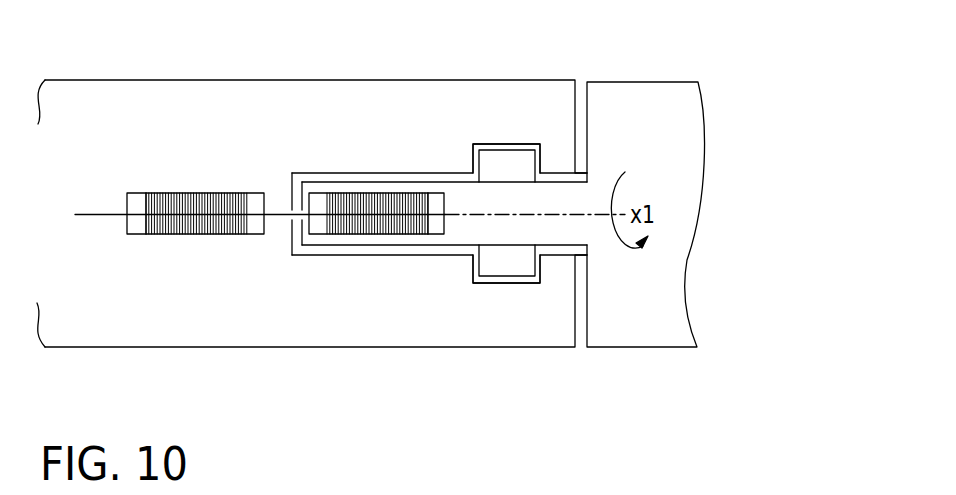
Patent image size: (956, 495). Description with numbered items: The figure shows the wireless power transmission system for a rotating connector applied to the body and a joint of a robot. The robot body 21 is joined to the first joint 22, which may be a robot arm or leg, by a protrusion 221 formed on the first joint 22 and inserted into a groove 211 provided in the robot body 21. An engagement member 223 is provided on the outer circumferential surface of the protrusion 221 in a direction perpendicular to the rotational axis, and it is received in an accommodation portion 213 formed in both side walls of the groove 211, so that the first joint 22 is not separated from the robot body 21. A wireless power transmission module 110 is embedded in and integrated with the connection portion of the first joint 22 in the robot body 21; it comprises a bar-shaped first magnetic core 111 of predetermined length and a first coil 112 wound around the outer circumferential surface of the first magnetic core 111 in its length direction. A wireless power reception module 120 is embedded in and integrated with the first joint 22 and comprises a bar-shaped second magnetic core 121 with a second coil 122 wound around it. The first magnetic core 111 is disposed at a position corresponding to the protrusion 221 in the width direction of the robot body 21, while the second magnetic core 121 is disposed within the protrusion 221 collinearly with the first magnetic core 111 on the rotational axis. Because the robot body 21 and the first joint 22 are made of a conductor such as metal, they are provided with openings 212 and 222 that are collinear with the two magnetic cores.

The robot body 21 is at (259, 97).
The first joint 22 is at (652, 93).
The wireless power transmission module 110 is at (153, 214).
The first magnetic core 111 is at (137, 200).
The first coil 112 is at (175, 203).
The wireless power reception module 120 is at (384, 204).
The second magnetic core 121 is at (437, 198).
The second coil 122 is at (360, 225).
The groove 211 is at (395, 240).
The opening 212 is at (291, 219).
The accommodation portion 213 is at (492, 148).
The protrusion 221 is at (433, 247).
The opening 222 is at (301, 208).
The engagement member 223 is at (513, 163).